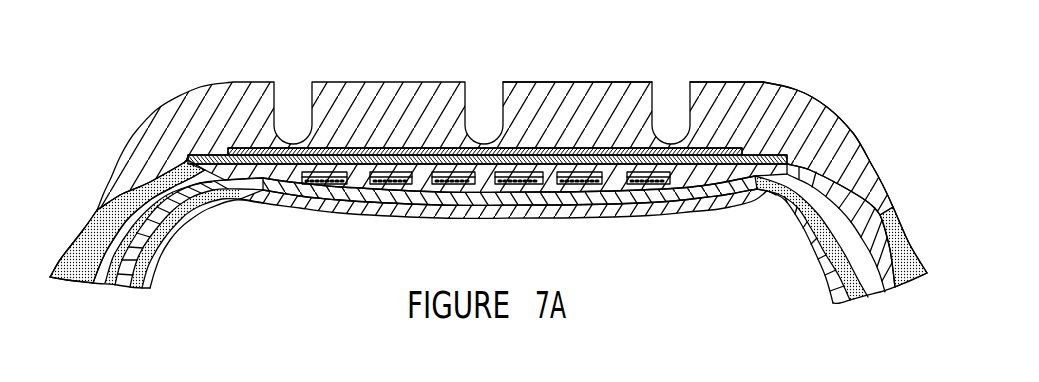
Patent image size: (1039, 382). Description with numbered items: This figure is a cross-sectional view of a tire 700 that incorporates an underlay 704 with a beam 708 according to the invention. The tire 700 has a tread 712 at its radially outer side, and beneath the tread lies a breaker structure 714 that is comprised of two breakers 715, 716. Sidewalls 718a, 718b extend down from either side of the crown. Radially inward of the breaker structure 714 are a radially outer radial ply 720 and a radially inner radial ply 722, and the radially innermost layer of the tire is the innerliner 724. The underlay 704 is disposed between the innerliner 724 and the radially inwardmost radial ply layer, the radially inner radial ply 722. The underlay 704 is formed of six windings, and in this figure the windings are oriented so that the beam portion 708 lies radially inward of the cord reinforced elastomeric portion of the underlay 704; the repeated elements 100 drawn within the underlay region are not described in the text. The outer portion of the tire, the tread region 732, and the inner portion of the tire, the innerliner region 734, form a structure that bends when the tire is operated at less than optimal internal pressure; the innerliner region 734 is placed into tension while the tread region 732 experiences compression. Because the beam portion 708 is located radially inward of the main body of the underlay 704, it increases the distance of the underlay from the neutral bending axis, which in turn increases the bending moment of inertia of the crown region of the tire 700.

The tire 700 is at (494, 76).
The tread 712 is at (375, 100).
The tread region 732 is at (618, 80).
The breaker 716 is at (707, 150).
The breaker structure 714 is at (748, 143).
The breaker 715 is at (840, 120).
The radially inner radial ply 722 is at (850, 165).
The radially outer radial ply 720 is at (887, 200).
The sidewall 718a is at (907, 257).
The sidewall 718b is at (72, 281).
The innerliner region 734 is at (247, 208).
The electronic component 100 is at (327, 187).
The beam 708 is at (517, 188).
The underlay 704 is at (606, 219).
The innerliner 724 is at (748, 203).